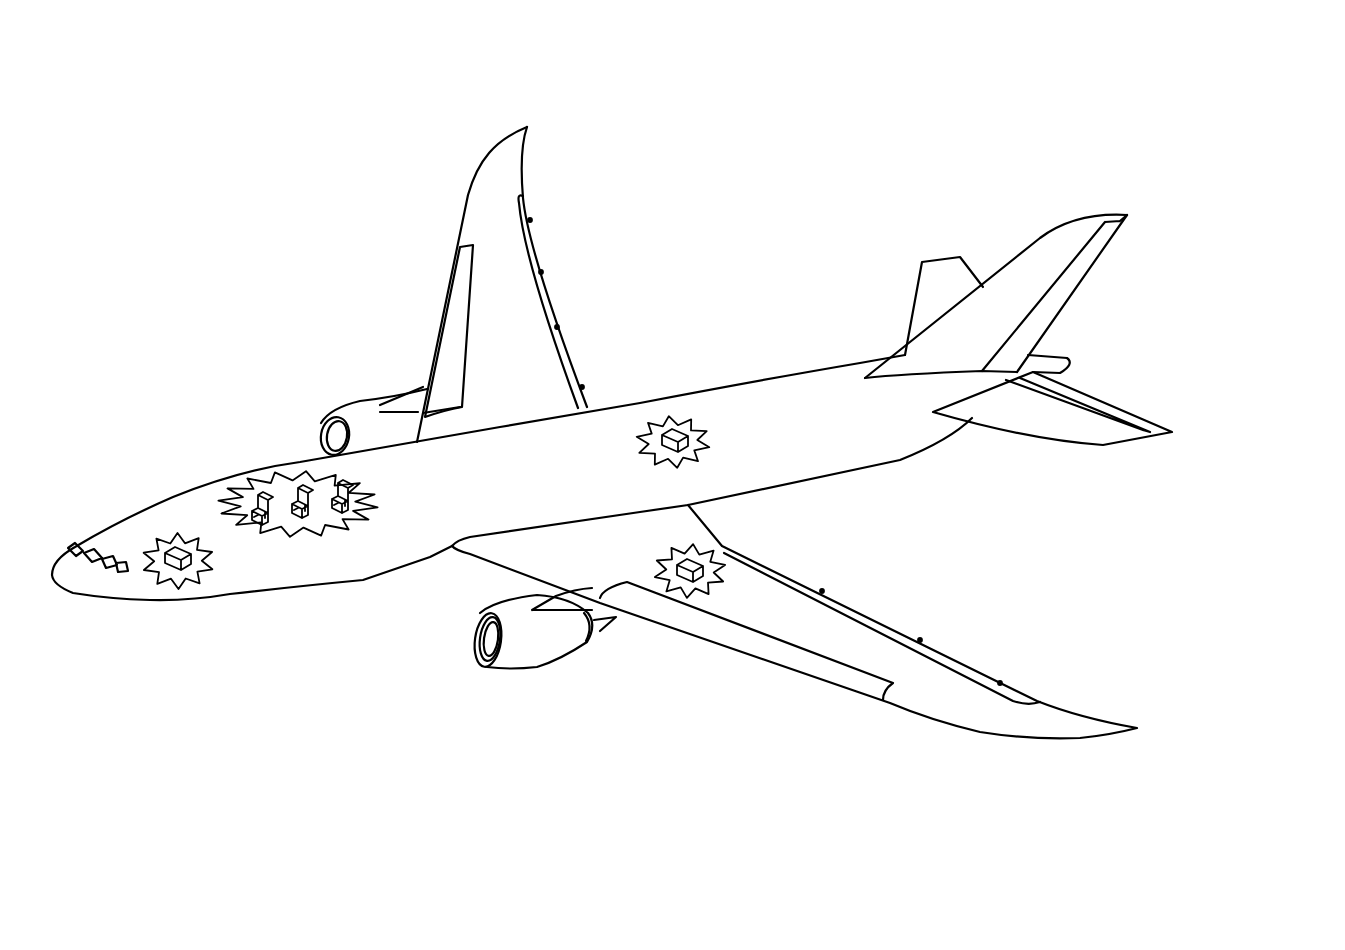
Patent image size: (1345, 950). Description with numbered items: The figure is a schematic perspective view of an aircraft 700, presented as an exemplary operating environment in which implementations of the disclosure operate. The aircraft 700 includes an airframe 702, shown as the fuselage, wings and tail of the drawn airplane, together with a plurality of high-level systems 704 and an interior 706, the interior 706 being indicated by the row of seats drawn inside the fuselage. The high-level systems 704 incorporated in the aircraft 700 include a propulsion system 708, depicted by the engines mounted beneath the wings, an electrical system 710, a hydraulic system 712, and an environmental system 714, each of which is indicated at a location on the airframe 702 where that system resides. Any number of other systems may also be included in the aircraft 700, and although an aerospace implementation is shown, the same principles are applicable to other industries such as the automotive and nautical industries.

The aircraft 700 is at (1262, 110).
The airframe 702 is at (282, 440).
The high-level systems 704 is at (776, 343).
The interior 706 is at (258, 495).
The propulsion system 708 is at (358, 410).
The electrical system 710 is at (178, 547).
The hydraulic system 712 is at (690, 560).
The environmental system 714 is at (672, 425).